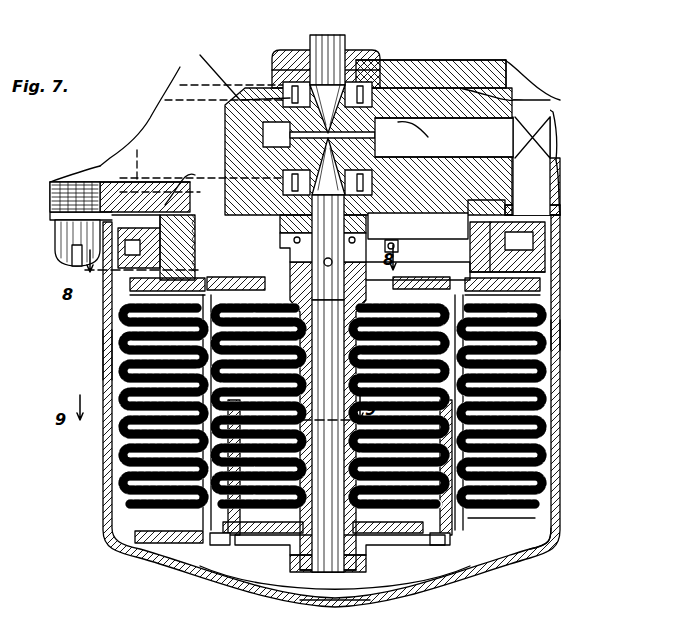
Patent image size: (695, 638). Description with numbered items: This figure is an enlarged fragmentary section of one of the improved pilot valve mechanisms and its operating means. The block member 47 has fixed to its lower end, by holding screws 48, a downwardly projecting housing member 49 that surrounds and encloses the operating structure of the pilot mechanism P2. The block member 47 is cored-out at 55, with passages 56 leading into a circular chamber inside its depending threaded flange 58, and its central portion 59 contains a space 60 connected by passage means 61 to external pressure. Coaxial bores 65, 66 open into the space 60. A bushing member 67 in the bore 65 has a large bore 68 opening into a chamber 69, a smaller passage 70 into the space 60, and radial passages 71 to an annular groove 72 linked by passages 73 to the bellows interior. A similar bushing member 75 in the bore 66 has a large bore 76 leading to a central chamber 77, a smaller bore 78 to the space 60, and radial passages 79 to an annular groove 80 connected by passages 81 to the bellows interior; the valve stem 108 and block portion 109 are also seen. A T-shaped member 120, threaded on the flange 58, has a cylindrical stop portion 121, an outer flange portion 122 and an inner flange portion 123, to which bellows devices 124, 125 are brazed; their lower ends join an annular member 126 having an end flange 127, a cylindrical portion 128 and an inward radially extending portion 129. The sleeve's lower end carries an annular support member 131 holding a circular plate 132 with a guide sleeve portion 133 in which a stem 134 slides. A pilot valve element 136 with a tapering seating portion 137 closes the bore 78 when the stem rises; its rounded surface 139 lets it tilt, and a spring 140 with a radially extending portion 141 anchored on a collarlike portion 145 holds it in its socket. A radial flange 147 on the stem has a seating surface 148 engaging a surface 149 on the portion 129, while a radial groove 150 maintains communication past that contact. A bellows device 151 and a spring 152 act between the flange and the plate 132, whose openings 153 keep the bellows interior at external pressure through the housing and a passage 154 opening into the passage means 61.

The pilot mechanism P2 is at (572, 349).
The block member 47 is at (556, 184).
The holding screws 48 is at (70, 182).
The housing member 49 is at (103, 343).
The cored-out portion 55 is at (118, 152).
The passages 56 is at (160, 190).
The depending threaded flange 58 is at (535, 240).
The central portion 59 is at (395, 62).
The space 60 is at (440, 105).
The passage means 61 is at (470, 130).
The bore 65 is at (290, 52).
The bore 66 is at (290, 240).
The bushing member 67 is at (368, 52).
The bore 68 is at (343, 50).
The chamber 69 is at (290, 90).
The bore or passage 70 is at (225, 113).
The radial passages 71 is at (290, 95).
The annular groove 72 is at (228, 60).
The passages 73 is at (180, 70).
The bushing member 75 is at (385, 223).
The bore 76 is at (468, 232).
The central chamber 77 is at (385, 136).
The bore 78 is at (290, 180).
The radial passages 79 is at (430, 140).
The annular groove 80 is at (283, 185).
The passages 81 is at (142, 185).
The valve stem 108 is at (318, 50).
The block 109 is at (455, 90).
The member 120 is at (548, 260).
The cylindrical stop portion 121 is at (540, 372).
The outer flange portion 122 is at (540, 282).
The inner flange portion 123 is at (470, 296).
The bellows device 124 is at (540, 448).
The bellows device 125 is at (560, 326).
The annular member 126 is at (540, 520).
The end flange 127 is at (525, 553).
The cylindrical portion 128 is at (540, 462).
The radially extending portion 129 is at (200, 398).
The annular support member 131 is at (465, 550).
The circular plate 132 is at (418, 548).
The guide sleeve portion 133 is at (308, 560).
The stem 134 is at (345, 585).
The pilot valve element 136 is at (465, 136).
The tapering seating portion 137 is at (445, 122).
The rounded surface 139 is at (380, 272).
The spring 140 is at (280, 244).
The radially extending portion 141 is at (300, 292).
The collarlike portion 145 is at (398, 246).
The radial flange 147 is at (228, 450).
The seating surface 148 is at (540, 390).
The surface 149 is at (470, 420).
The radial groove 150 is at (130, 448).
The bellows device 151 is at (180, 543).
The spring 152 is at (232, 545).
The openings 153 is at (275, 548).
The passage 154 is at (540, 204).